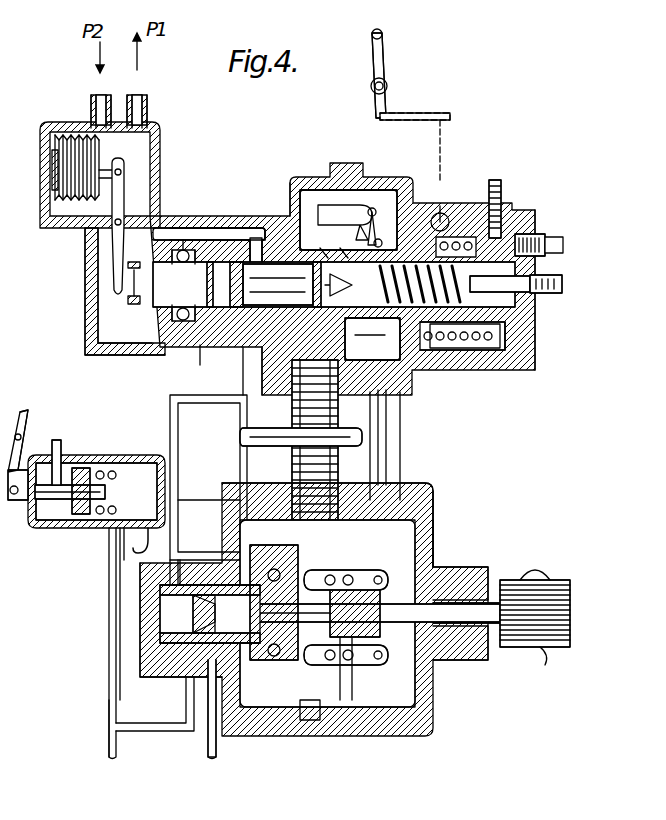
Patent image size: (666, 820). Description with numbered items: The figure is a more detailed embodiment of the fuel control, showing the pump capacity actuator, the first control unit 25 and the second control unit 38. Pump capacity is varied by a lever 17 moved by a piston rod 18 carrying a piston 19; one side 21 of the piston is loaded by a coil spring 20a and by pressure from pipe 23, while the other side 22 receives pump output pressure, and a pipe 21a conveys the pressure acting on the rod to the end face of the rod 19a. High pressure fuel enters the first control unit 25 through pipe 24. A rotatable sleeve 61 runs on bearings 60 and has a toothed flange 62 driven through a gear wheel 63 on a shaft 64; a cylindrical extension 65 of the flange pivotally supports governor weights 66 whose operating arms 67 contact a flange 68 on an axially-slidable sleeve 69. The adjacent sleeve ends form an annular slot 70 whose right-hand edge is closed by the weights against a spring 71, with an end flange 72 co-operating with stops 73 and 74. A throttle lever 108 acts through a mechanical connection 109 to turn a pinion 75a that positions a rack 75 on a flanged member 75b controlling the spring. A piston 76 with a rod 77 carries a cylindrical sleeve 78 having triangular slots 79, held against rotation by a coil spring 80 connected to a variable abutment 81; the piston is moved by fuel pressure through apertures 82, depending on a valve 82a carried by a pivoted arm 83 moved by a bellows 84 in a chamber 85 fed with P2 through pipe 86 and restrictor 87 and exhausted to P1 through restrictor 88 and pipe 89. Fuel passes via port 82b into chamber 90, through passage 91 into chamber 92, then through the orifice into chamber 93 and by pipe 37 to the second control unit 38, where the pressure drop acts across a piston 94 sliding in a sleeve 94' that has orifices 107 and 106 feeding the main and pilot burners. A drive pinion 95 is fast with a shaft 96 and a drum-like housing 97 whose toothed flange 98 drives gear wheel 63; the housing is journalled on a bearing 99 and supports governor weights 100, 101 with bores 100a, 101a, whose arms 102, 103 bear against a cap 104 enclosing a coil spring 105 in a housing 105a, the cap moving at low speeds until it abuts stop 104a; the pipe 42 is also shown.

The lever 17 is at (28, 430).
The piston rod 18 is at (60, 485).
The piston 19 is at (78, 490).
The end face of the rod 19a is at (110, 545).
The coil spring 20a is at (122, 526).
The side of the piston 21 is at (125, 470).
The pipe 21a is at (118, 580).
The side of the piston 22 is at (92, 480).
The pipe 23 is at (112, 716).
The pipe 24 is at (200, 226).
The first control unit 25 is at (285, 224).
The pipe 37 is at (384, 435).
The second control unit 38 is at (392, 490).
The pipe 42 is at (120, 600).
The bearings 60 is at (305, 215).
The rotatable sleeve 61 is at (256, 226).
The toothed flange 62 is at (270, 352).
The gear wheel 63 is at (230, 510).
The shaft 64 is at (245, 440).
The cylindrical extension 65 is at (372, 212).
The governor weights 66 is at (345, 205).
The operating arms 67 is at (385, 240).
The flange 68 is at (438, 215).
The axially-slidable sleeve 69 is at (455, 240).
The annular slot 70 is at (334, 242).
The spring 71 is at (520, 372).
The end flange 72 is at (534, 366).
The stop 73 is at (535, 232).
The stop 74 is at (540, 272).
The rack 75 is at (465, 262).
The pinion 75a is at (496, 178).
The flanged member 75b is at (462, 350).
The piston 76 is at (185, 350).
The rod 77 is at (232, 371).
The cylindrical sleeve 78 is at (312, 264).
The triangular slots 79 is at (358, 339).
The coil spring 80 is at (440, 350).
The variable abutment 81 is at (505, 352).
The apertures 82 is at (140, 350).
The valve 82a is at (128, 262).
The port 82b is at (128, 303).
The pivoted arm 83 is at (124, 192).
The bellows 84 is at (100, 158).
The chamber 85 is at (150, 125).
The pipe 86 is at (90, 106).
The restrictor 87 is at (110, 104).
The restrictor 88 is at (146, 118).
The pipe 89 is at (146, 104).
The chamber 90 is at (94, 279).
The passage 91 is at (222, 238).
The chamber 92 is at (186, 313).
The chamber 93 is at (385, 375).
The piston 94 is at (210, 614).
The sleeve 94' is at (146, 622).
The drive pinion 95 is at (553, 578).
The shaft 96 is at (525, 590).
The drum-like housing 97 is at (433, 530).
The toothed flange 98 is at (340, 500).
The bearing 99 is at (250, 560).
The governor weight 100 is at (420, 490).
The bore 100a is at (360, 578).
The governor weight 101 is at (300, 675).
The bore 101a is at (348, 664).
The arm 102 is at (432, 680).
The arm 103 is at (440, 600).
The cap 104 is at (440, 650).
The stop 104a is at (495, 603).
The coil spring 105 is at (350, 668).
The housing 105a is at (336, 662).
The orifice 106 is at (213, 735).
The orifice 107 is at (192, 735).
The lever 108 is at (382, 64).
The mechanical connection 109 is at (450, 128).